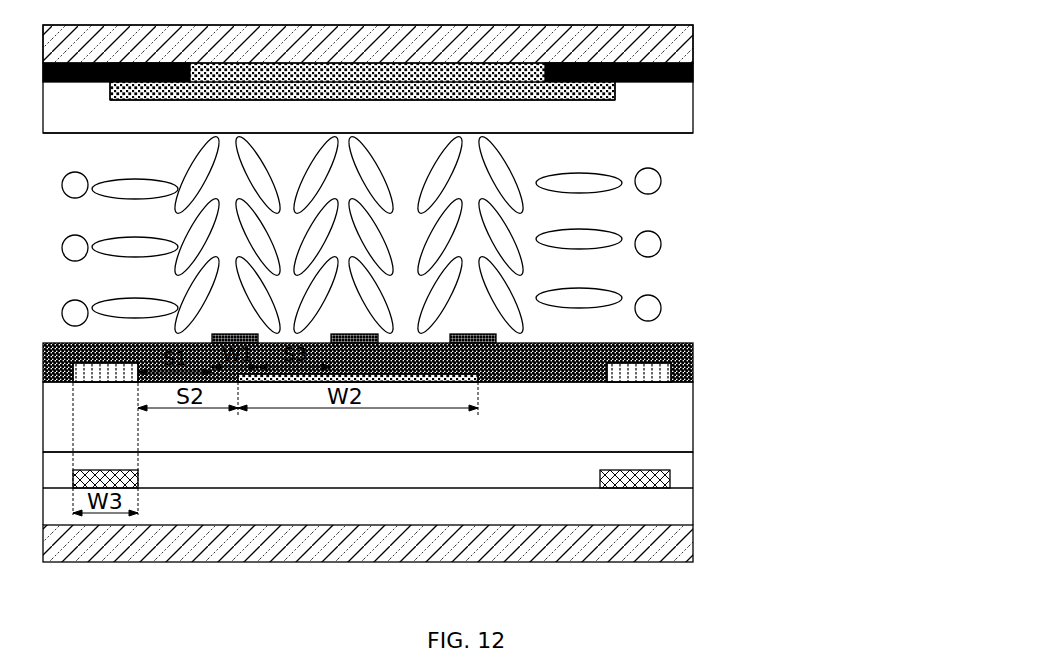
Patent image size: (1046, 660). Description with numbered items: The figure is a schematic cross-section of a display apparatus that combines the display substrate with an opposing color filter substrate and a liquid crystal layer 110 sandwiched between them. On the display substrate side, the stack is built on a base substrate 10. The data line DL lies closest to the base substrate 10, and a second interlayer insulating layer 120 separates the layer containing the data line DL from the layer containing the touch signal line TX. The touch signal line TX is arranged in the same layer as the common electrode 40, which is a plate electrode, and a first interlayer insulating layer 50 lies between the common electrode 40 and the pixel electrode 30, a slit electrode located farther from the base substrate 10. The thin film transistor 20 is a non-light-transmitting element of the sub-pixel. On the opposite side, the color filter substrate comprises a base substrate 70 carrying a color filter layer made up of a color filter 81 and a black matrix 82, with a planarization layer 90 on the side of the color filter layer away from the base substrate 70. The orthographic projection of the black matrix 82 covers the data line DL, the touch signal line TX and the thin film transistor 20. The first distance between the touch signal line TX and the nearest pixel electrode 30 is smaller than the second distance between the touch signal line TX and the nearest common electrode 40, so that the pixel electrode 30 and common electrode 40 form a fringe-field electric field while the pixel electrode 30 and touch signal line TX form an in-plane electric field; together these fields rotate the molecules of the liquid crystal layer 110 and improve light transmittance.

The base substrate 70 is at (693, 44).
The black matrix 82 is at (693, 72).
The color filter 81 is at (615, 100).
The planarization layer 90 is at (645, 128).
The liquid crystal layer 110 is at (661, 244).
The pixel electrode 30 is at (497, 340).
The first interlayer insulating layer 50 is at (693, 348).
The touch signal line TX is at (693, 372).
The thin film transistor 20 is at (677, 403).
The common electrode 40 is at (505, 382).
The second interlayer insulating layer 120 is at (688, 465).
The data line DL is at (670, 480).
The base substrate 10 is at (693, 543).